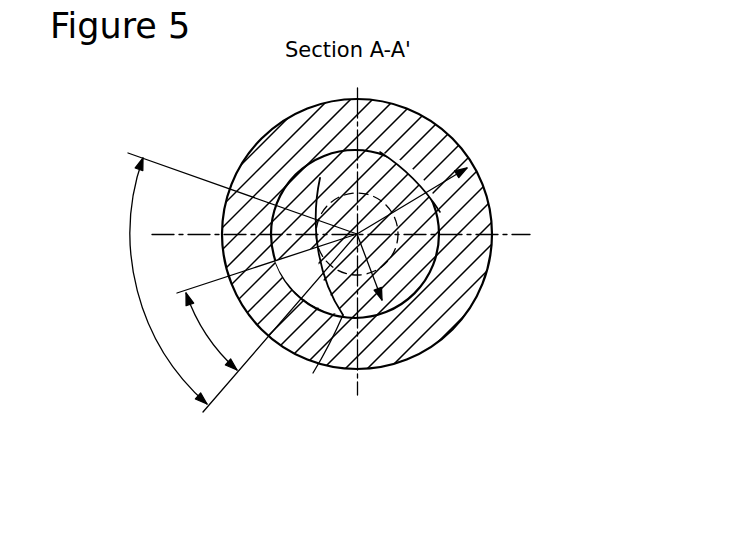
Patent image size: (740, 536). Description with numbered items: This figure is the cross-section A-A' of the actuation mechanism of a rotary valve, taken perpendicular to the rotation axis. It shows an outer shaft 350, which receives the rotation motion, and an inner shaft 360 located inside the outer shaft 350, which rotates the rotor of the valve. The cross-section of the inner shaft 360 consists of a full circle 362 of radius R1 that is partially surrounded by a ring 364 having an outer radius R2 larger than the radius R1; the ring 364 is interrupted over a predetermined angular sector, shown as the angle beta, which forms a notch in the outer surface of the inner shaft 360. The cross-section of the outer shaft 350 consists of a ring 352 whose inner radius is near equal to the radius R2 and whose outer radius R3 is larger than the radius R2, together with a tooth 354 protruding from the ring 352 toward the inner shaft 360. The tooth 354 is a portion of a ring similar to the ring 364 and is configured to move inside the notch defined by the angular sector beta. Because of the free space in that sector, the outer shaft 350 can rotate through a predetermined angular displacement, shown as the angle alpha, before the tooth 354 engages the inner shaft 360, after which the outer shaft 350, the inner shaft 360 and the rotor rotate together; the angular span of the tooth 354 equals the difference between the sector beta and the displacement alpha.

The outer shaft 350 is at (405, 166).
The ring 352 is at (277, 153).
The tooth 354 is at (357, 234).
The inner shaft 360 is at (415, 250).
The full circle 362 is at (320, 178).
The ring 364 is at (387, 150).
The radius R1 is at (314, 360).
The outer radius R2 is at (400, 255).
The outer radius R3 is at (440, 210).